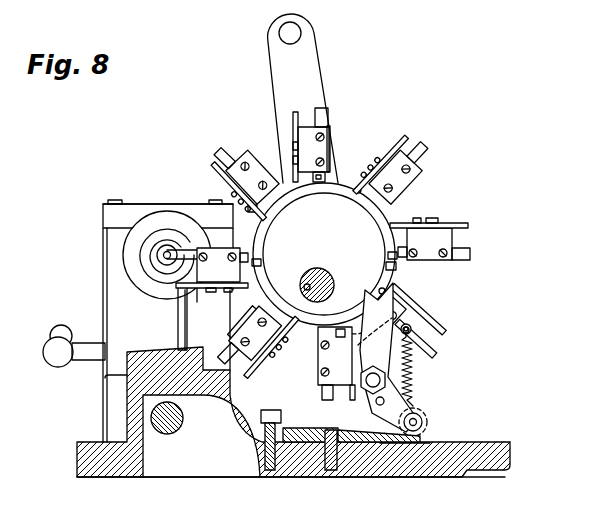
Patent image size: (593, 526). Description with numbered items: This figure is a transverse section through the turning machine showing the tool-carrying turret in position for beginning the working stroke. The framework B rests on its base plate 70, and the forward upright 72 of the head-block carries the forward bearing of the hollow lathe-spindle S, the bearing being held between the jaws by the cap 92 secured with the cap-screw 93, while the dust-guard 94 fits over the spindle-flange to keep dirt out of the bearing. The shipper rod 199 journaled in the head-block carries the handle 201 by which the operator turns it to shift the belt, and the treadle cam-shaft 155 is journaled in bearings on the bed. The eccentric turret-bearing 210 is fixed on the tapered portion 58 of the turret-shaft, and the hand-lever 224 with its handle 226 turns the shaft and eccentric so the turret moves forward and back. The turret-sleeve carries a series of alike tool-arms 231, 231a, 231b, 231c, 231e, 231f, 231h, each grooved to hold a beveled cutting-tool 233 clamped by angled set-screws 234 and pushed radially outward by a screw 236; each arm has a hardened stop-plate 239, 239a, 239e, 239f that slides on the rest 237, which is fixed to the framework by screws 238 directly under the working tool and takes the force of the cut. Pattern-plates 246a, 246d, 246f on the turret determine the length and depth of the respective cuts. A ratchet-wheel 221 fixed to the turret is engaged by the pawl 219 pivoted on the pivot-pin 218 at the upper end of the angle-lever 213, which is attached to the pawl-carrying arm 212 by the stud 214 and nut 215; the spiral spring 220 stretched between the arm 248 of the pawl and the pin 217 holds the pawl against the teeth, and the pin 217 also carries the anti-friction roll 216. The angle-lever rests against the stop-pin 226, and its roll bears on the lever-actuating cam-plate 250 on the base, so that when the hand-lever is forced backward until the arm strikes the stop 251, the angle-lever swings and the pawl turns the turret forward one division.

The base plate 70 is at (500, 457).
The forward upright 72 is at (103, 272).
The cap 92 is at (107, 214).
The cap-screw 93 is at (116, 202).
The dust-guard 94 is at (167, 222).
The lathe-spindle S is at (160, 262).
The framework B is at (208, 453).
The cam-shaft 155 is at (170, 432).
The rod 199 is at (88, 362).
The handle 201 is at (55, 338).
The eccentric turret-bearing 210 is at (385, 221).
The pawl-carrying arm 212 is at (418, 347).
The angle-lever 213 is at (398, 403).
The stud 214 is at (371, 393).
The nut 215 is at (352, 392).
The anti-friction roll 216 is at (426, 421).
The pin 217 is at (423, 447).
The pivot-pin 218 is at (437, 332).
The pawl 219 is at (413, 297).
The spiral spring 220 is at (415, 372).
The ratchet-wheel 221 is at (396, 266).
The hand-lever 224 is at (306, 68).
The stop-pin 226 is at (378, 446).
The tool-arm 231 is at (313, 154).
The tool-arm 231a is at (222, 265).
The tool-arm 231b is at (260, 338).
The tool-arm 231c is at (336, 363).
The tool-arm 231e is at (425, 244).
The tool-arm 231f is at (395, 177).
The tool-arm 231h is at (252, 177).
The cutting-tool 233 is at (223, 153).
The set-screw 234 is at (328, 158).
The screw 236 is at (255, 206).
The rest 237 is at (178, 325).
The screw 238 is at (326, 118).
The stop-plate 239 is at (237, 193).
The stop-plate 239a is at (196, 290).
The stop-plate 239e is at (462, 226).
The stop-plate 239f is at (414, 123).
The pattern-plate 246a is at (304, 286).
The pattern-plate 246d is at (379, 292).
The pattern-plate 246f is at (357, 193).
The arm of the pawl 248 is at (410, 319).
The lever-actuating cam-plate 250 is at (356, 443).
The stop 251 is at (282, 414).
The tapered portion 58 is at (308, 277).